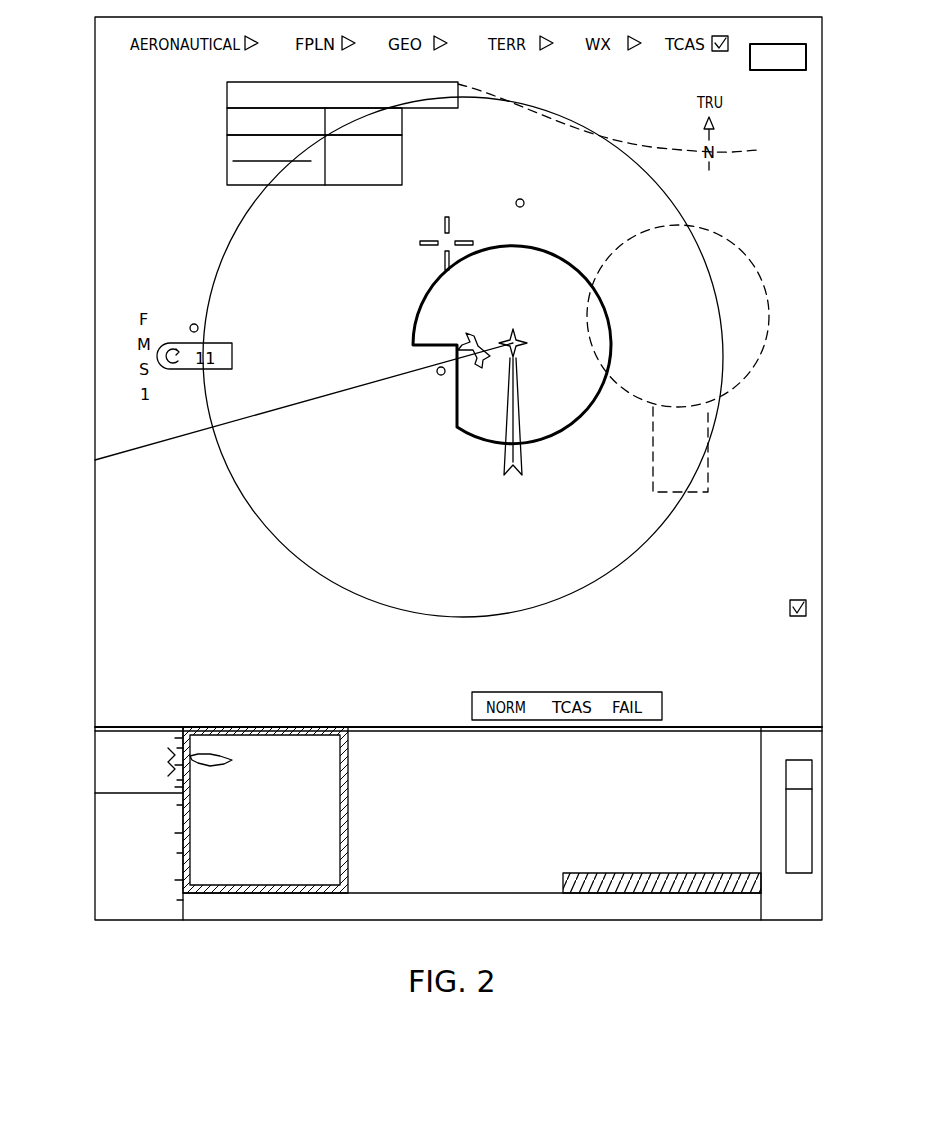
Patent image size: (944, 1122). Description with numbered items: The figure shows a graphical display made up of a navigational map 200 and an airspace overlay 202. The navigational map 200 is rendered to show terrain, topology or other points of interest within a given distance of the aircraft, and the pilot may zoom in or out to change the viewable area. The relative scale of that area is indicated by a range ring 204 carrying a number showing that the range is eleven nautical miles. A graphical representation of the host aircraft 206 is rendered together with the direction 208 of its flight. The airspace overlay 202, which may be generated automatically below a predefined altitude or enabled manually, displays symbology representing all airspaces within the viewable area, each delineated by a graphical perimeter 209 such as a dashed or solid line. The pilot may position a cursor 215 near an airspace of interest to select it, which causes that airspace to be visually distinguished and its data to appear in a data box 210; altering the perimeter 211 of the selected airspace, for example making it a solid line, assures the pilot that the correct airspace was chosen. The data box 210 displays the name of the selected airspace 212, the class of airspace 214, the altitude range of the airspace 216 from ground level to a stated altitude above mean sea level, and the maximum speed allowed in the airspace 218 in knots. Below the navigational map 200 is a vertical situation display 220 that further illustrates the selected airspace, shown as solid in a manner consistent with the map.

The navigational map 200 is at (95, 177).
The airspace overlay 202 is at (788, 683).
The range ring 204 is at (222, 255).
The host aircraft 206 is at (478, 336).
The direction of flight 208 is at (330, 392).
The graphical perimeter 209 is at (652, 146).
The data box 210 is at (403, 158).
The perimeter 211 is at (462, 438).
The name of the selected airspace 212 is at (228, 90).
The class of airspace 214 is at (230, 121).
The cursor 215 is at (443, 262).
The altitude range of the airspace 216 is at (254, 174).
The maximum speed allowed in the airspace 218 is at (350, 174).
The vertical situation display 220 is at (95, 843).